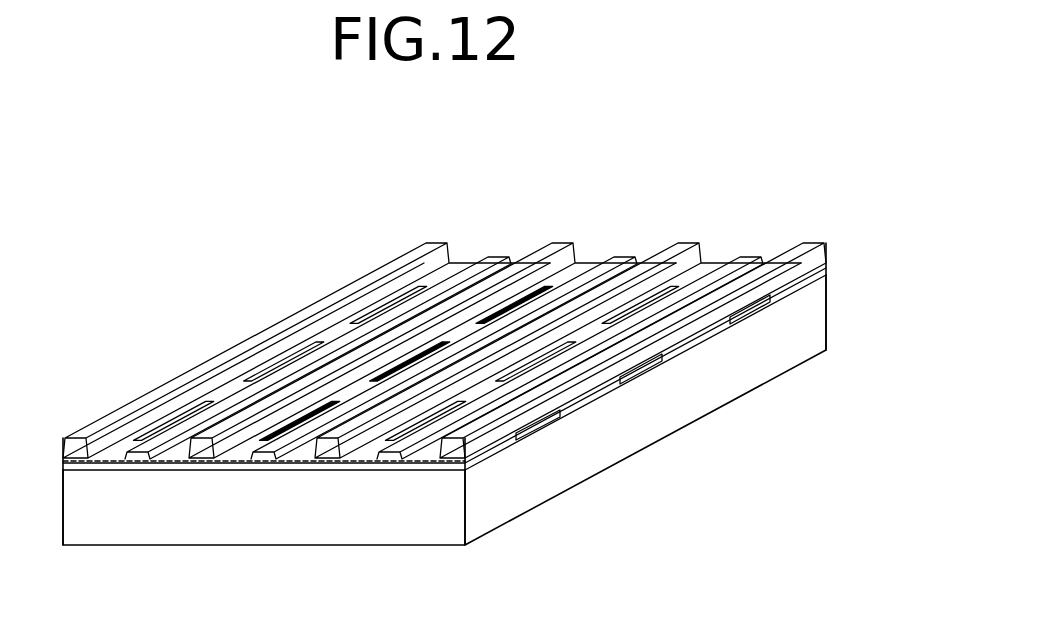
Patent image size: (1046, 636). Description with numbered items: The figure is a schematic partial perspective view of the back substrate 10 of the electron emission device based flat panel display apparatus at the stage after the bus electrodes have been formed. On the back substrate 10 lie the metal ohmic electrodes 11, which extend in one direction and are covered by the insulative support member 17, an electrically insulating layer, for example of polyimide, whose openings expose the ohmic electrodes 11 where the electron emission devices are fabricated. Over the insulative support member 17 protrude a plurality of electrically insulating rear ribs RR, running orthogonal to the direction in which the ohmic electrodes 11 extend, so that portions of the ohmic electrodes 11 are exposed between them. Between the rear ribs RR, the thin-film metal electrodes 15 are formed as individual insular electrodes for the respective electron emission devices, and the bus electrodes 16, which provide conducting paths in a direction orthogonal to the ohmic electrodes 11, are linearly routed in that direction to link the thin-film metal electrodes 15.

The back substrate 10 is at (821, 338).
The ohmic electrodes 11 is at (648, 373).
The thin-film metal electrodes 15 is at (657, 291).
The bus electrodes 16 is at (481, 259).
The insulative support member 17 is at (827, 273).
The rear ribs RR is at (829, 246).